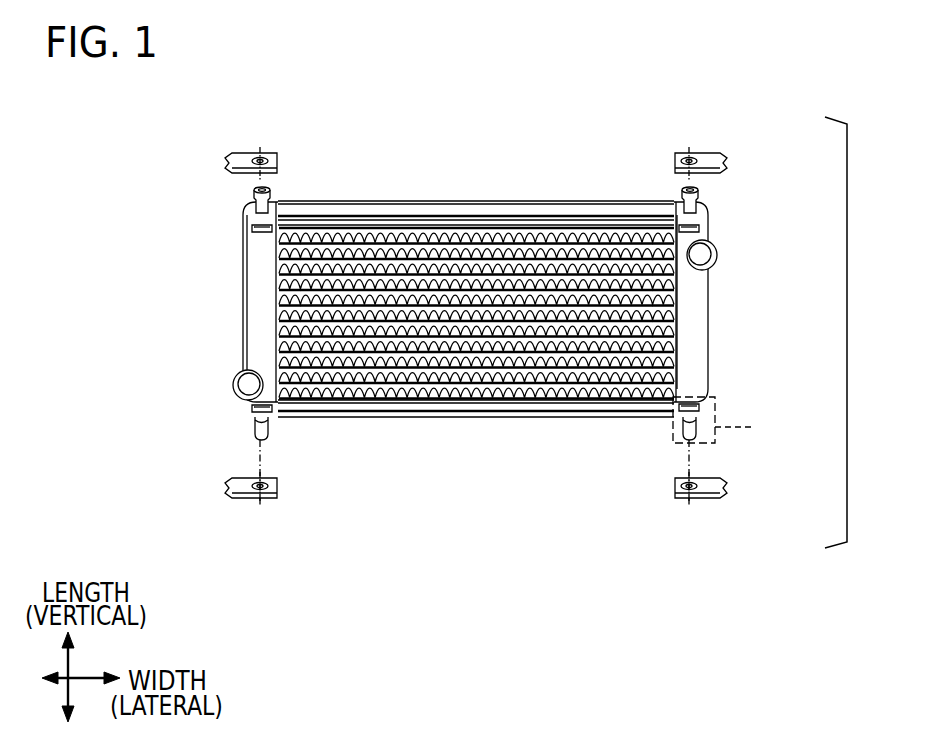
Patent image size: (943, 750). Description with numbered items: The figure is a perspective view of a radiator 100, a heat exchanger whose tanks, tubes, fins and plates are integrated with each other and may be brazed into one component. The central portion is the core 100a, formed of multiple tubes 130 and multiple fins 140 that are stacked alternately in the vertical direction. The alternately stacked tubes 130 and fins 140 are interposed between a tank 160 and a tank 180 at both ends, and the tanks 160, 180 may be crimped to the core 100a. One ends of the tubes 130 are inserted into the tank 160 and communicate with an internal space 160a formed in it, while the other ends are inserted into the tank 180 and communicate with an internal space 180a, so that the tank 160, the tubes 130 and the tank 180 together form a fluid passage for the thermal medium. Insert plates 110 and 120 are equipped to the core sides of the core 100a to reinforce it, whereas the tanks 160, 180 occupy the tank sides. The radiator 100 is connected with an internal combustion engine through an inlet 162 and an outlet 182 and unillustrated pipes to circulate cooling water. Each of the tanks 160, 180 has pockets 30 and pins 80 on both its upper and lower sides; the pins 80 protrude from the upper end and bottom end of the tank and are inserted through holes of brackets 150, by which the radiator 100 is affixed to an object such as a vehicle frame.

The radiator 100 is at (378, 143).
The core 100a is at (537, 195).
The plate 110 is at (312, 201).
The plate 120 is at (310, 418).
The tubes 130 is at (278, 262).
The fins 140 is at (282, 240).
The brackets 150 is at (713, 153).
The tank 160 is at (708, 365).
The internal space 160a is at (734, 306).
The inlet 162 is at (716, 256).
The tank 180 is at (243, 348).
The internal space 180a is at (218, 311).
The outlet 182 is at (235, 393).
The pins 80 is at (697, 440).
The pockets 30 is at (712, 403).